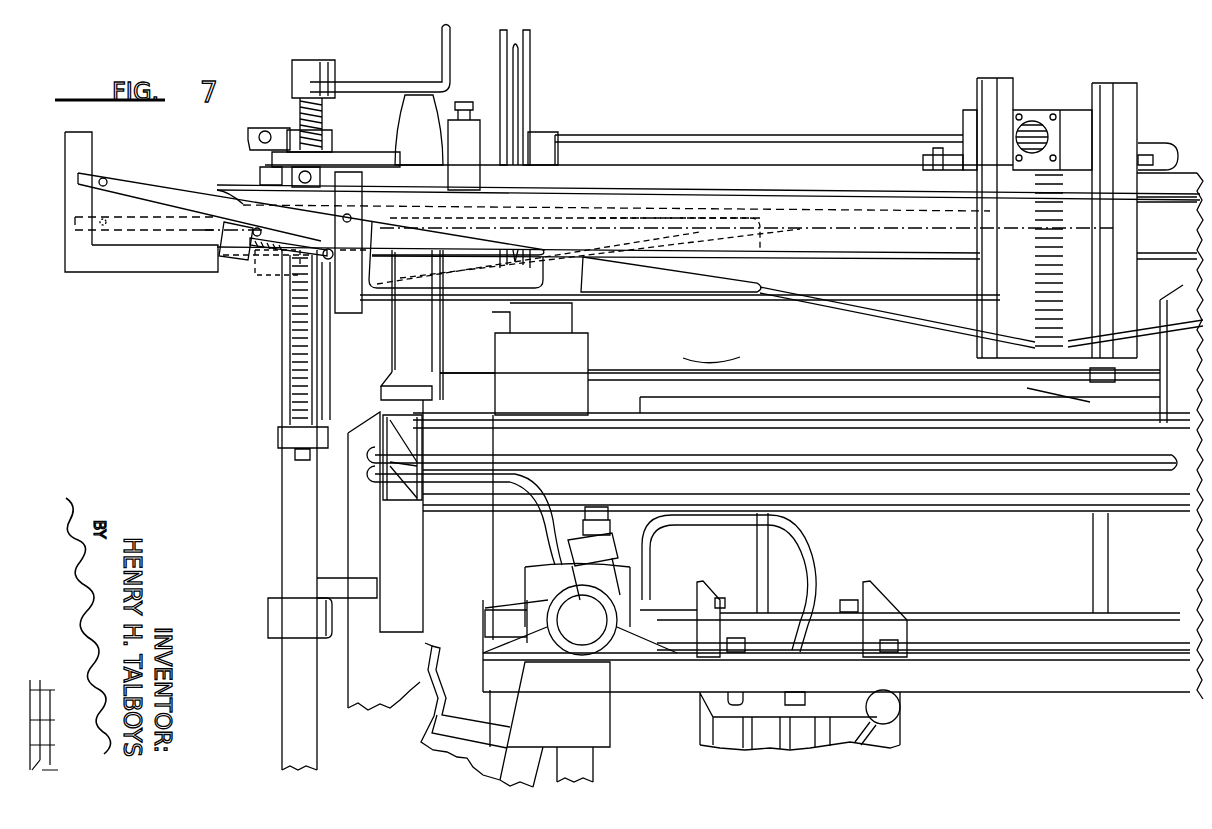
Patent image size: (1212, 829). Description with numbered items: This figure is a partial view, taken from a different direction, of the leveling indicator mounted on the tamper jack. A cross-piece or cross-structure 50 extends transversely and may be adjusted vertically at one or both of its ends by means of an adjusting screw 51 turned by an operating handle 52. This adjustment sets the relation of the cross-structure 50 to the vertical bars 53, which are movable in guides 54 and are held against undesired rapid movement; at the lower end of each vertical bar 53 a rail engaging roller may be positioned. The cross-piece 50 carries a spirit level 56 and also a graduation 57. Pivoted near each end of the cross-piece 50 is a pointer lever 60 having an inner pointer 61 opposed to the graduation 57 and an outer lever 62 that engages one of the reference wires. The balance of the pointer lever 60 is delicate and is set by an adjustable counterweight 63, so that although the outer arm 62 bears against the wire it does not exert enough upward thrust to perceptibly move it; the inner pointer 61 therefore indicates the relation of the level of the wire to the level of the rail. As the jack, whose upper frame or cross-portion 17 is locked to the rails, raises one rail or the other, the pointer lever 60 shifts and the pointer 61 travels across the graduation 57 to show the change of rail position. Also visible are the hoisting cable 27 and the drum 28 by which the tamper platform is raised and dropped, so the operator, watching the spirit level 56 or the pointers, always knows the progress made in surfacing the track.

The upper frame or cross-portion 17 is at (1066, 692).
The hoisting cable 27 is at (530, 35).
The drum 28 is at (531, 80).
The cross-piece or cross-structure 50 is at (914, 242).
The adjusting screw 51 is at (300, 111).
The operating handle 52 is at (442, 46).
The vertical bar 53 is at (296, 514).
The guide 54 is at (285, 617).
The spirit level 56 is at (1037, 137).
The graduation 57 is at (1082, 207).
The pointer lever 60 is at (728, 275).
The inner pointer 61 is at (905, 322).
The outer lever 62 is at (136, 186).
The adjustable counterweight 63 is at (236, 252).